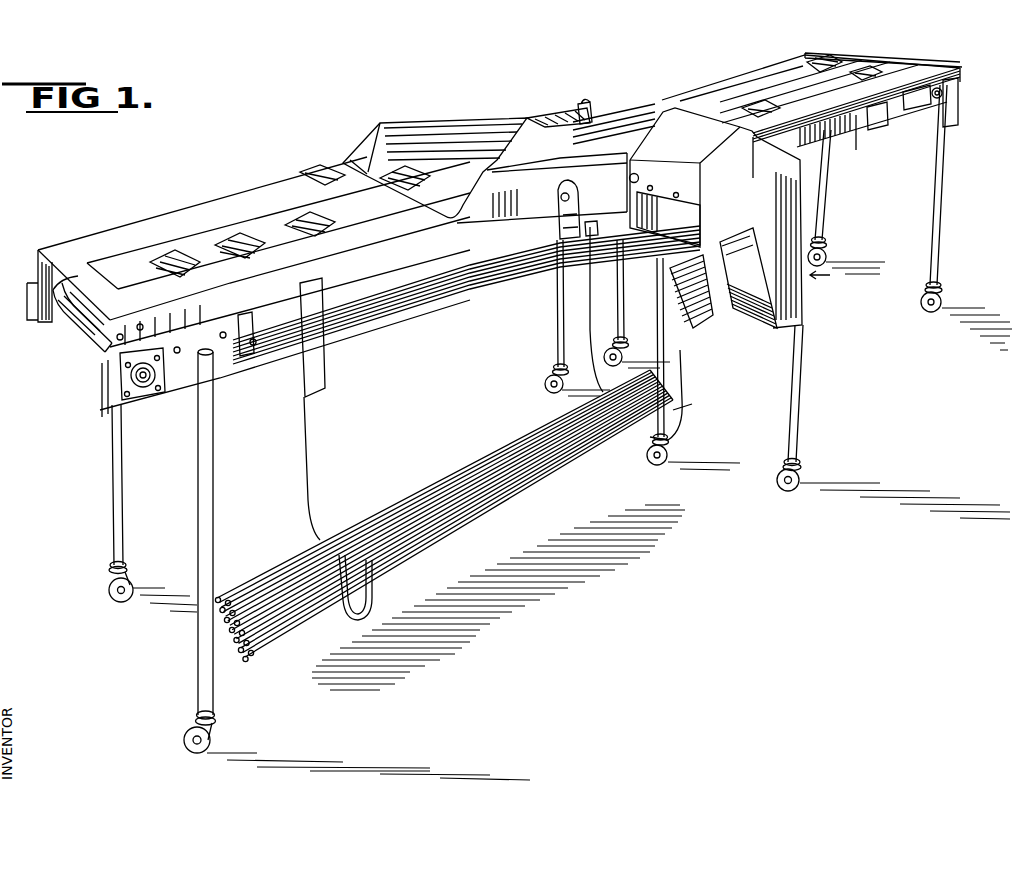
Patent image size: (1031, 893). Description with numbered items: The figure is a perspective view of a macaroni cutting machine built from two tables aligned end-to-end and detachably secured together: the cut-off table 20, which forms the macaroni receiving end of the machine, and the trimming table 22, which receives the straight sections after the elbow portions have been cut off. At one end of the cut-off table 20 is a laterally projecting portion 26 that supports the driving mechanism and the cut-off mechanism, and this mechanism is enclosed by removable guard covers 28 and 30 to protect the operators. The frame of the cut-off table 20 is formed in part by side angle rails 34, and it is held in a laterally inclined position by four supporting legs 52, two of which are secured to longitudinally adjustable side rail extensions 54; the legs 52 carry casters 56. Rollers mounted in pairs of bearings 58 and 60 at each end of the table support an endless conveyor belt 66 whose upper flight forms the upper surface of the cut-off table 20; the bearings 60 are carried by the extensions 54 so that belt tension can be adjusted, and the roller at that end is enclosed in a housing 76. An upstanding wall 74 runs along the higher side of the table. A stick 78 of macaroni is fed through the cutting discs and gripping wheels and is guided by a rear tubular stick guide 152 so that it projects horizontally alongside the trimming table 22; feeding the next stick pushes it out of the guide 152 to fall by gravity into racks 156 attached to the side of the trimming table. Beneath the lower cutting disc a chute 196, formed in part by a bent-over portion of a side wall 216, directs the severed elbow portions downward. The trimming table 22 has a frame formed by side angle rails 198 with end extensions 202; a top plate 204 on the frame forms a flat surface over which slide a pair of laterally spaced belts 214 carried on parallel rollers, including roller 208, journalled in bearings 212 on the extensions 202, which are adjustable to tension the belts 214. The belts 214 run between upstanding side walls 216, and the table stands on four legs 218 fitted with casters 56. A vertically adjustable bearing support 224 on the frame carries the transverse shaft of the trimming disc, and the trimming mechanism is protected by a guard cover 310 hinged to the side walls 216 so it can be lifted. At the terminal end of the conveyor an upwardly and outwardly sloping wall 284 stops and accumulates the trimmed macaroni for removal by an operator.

The cut-off table 20 is at (711, 70).
The trimming table 22 is at (166, 203).
The laterally projecting portion 26 is at (832, 275).
The guard cover 28 is at (663, 112).
The guard cover 30 is at (758, 313).
The side angle rails 34 is at (912, 110).
The supporting legs 52 is at (624, 293).
The side rail extensions 54 is at (921, 108).
The casters 56 is at (187, 740).
The bearings 58 is at (583, 100).
The bearings 60 is at (953, 80).
The endless conveyor belt 66 is at (760, 83).
The upstanding wall 74 is at (863, 112).
The housing 76 is at (890, 66).
The stick 78 is at (520, 478).
The rear tubular stick guide 152 is at (629, 178).
The racks 156 is at (310, 442).
The chute 196 is at (705, 315).
The side angle rails 198 is at (380, 283).
The end extensions 202 is at (34, 322).
The top plate 204 is at (222, 278).
The roller 208 is at (80, 350).
The bearings 212 is at (137, 402).
The belts 214 is at (200, 247).
The side walls 216 is at (130, 227).
The legs 218 is at (197, 523).
The bearing support 224 is at (580, 222).
The sloping wall 284 is at (88, 250).
The guard cover 310 is at (429, 127).